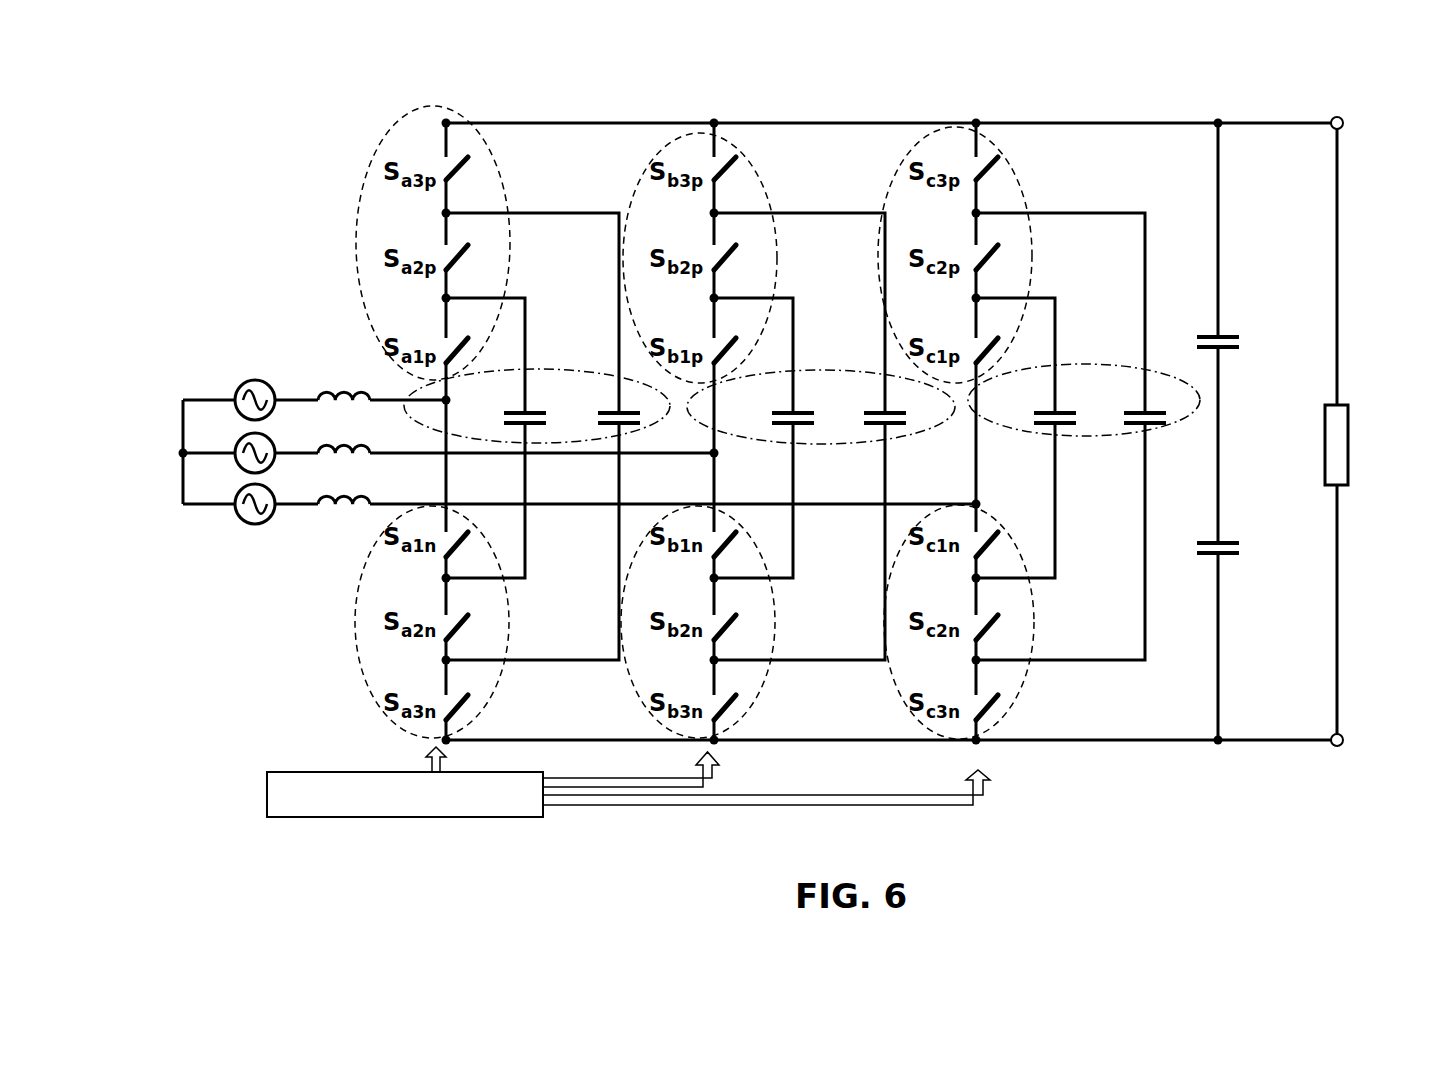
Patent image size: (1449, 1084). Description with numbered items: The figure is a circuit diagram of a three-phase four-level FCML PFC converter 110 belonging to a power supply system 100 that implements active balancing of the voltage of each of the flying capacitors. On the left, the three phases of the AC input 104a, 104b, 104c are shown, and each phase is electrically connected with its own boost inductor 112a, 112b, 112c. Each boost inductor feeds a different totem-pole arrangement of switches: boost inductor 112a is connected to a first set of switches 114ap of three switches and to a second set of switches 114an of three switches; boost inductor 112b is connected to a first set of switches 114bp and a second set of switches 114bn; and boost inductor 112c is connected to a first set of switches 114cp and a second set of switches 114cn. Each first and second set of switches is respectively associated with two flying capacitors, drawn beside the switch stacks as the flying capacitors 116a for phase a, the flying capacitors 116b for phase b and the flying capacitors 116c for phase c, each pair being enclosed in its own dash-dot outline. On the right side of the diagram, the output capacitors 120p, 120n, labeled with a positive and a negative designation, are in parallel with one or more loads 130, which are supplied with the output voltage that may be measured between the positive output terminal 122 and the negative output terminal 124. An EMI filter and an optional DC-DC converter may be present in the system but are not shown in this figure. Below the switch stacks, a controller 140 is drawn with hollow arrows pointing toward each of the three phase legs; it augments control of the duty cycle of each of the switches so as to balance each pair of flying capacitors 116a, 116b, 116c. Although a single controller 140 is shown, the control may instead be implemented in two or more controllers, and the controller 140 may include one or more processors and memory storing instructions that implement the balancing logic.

The power supply system 100 is at (147, 173).
The 3-phase 4-level FCML PFC converter 110 is at (235, 292).
The AC input 104a is at (220, 362).
The AC input 104b is at (218, 460).
The AC input 104c is at (232, 525).
The boost inductor 112a is at (317, 370).
The boost inductor 112b is at (313, 470).
The boost inductor 112c is at (342, 508).
The first set of switches 114ap is at (362, 178).
The first set of switches 114bp is at (753, 168).
The first set of switches 114cp is at (1022, 198).
The second set of switches 114an is at (360, 663).
The second set of switches 114bn is at (627, 668).
The second set of switches 114cn is at (1025, 672).
The flying capacitors 116a is at (587, 372).
The flying capacitors 116b is at (922, 432).
The flying capacitors 116c is at (1148, 428).
The output capacitor 120p is at (1232, 368).
The output capacitor 120n is at (1238, 573).
The positive output terminal 122 is at (1345, 122).
The negative output terminal 124 is at (1345, 742).
The load 130 is at (1350, 497).
The controller 140 is at (628, 782).